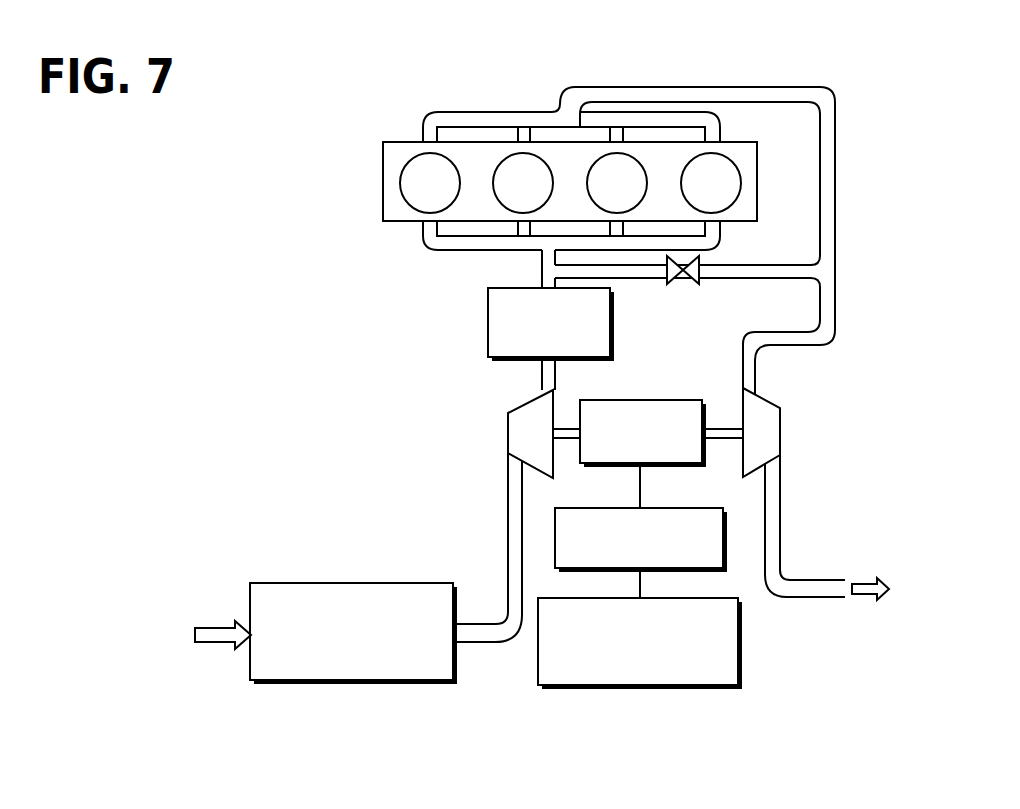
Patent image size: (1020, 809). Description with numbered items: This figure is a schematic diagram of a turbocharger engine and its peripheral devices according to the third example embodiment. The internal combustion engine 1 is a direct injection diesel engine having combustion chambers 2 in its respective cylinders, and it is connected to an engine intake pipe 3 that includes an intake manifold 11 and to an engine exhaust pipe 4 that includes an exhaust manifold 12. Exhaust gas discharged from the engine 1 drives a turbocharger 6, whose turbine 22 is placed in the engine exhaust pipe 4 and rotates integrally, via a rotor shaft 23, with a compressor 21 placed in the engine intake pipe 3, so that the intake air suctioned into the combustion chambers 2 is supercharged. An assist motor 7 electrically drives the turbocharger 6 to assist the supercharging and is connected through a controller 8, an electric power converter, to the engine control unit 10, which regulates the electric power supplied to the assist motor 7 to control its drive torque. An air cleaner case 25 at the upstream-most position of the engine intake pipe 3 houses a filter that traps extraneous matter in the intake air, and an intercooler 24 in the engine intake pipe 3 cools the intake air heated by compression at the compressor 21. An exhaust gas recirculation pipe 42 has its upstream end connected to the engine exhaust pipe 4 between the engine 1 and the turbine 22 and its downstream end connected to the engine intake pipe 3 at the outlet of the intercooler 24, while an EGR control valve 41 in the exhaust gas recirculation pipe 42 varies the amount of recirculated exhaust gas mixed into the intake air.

The internal combustion engine 1 is at (386, 143).
The combustion chamber 2 is at (412, 184).
The engine intake pipe 3 is at (507, 513).
The engine exhaust pipe 4 is at (808, 346).
The turbocharger 6 is at (475, 414).
The assist motor 7 is at (647, 400).
The controller 8 is at (723, 533).
The engine control unit 10 is at (738, 643).
The intake manifold 11 is at (448, 251).
The exhaust manifold 12 is at (509, 112).
The compressor 21 is at (512, 440).
The turbine 22 is at (770, 426).
The rotor shaft 23 is at (722, 428).
The intercooler 24 is at (488, 320).
The air cleaner case 25 is at (311, 583).
The EGR control valve 41 is at (688, 284).
The exhaust gas recirculation pipe 42 is at (767, 279).